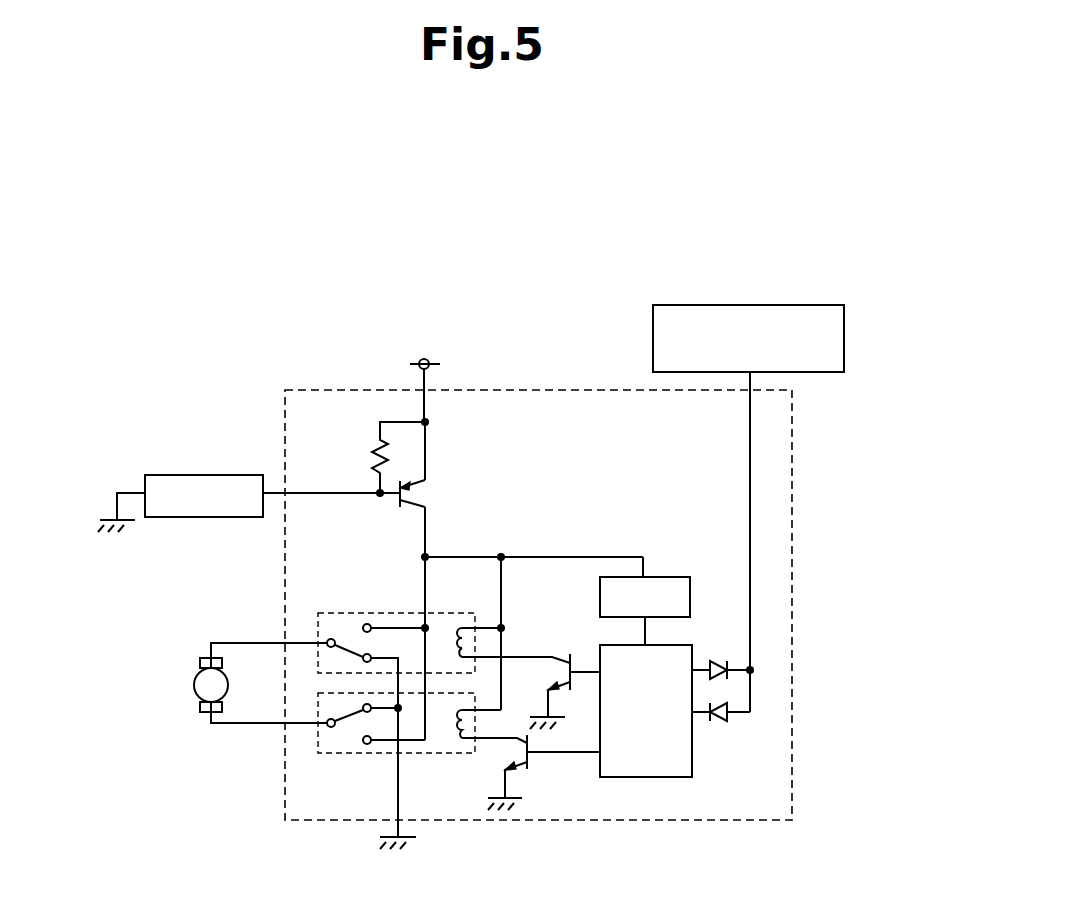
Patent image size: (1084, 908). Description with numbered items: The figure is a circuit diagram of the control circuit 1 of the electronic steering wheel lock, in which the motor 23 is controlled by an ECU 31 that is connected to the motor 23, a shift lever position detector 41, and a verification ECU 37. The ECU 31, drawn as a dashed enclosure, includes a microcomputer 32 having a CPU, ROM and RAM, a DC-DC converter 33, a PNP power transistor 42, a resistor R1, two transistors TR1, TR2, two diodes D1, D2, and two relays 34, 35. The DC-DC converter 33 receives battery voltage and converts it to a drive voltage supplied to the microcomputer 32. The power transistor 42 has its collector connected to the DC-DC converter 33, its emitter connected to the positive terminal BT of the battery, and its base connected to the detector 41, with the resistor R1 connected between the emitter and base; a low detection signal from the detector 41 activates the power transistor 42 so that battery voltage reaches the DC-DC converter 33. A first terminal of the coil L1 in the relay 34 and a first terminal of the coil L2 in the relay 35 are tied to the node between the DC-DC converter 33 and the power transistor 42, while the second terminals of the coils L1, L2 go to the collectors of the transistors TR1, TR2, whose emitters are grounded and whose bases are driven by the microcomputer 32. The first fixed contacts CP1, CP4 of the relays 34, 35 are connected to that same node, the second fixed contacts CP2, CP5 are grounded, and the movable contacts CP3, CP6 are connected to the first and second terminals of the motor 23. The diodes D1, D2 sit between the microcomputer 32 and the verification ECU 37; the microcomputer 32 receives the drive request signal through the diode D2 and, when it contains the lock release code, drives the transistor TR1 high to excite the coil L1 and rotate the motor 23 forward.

The vehicle remote control / engine starting system 1 is at (750, 268).
The motor 23 is at (194, 685).
The ECU 31 is at (792, 780).
The microcomputer 32 is at (672, 778).
The DC-DC converter 33 is at (671, 575).
The relay 34 is at (443, 606).
The relay 35 is at (424, 757).
The verification ECU 37 is at (845, 328).
The shift lever position detector 41 is at (185, 473).
The PNP power transistor 42 is at (398, 501).
The resistor R1 is at (375, 440).
The positive terminal of the battery BT is at (428, 358).
The coil L1 is at (467, 625).
The coil L2 is at (460, 741).
The transistor TR1 is at (562, 655).
The transistor TR2 is at (533, 758).
The diode D1 is at (723, 658).
The diode D2 is at (722, 724).
The first fixed contact CP1 is at (395, 602).
The second fixed contact CP2 is at (351, 653).
The movable contact CP3 is at (327, 640).
The first fixed contact CP4 is at (368, 746).
The second fixed contact CP5 is at (354, 717).
The movable contact CP6 is at (327, 725).